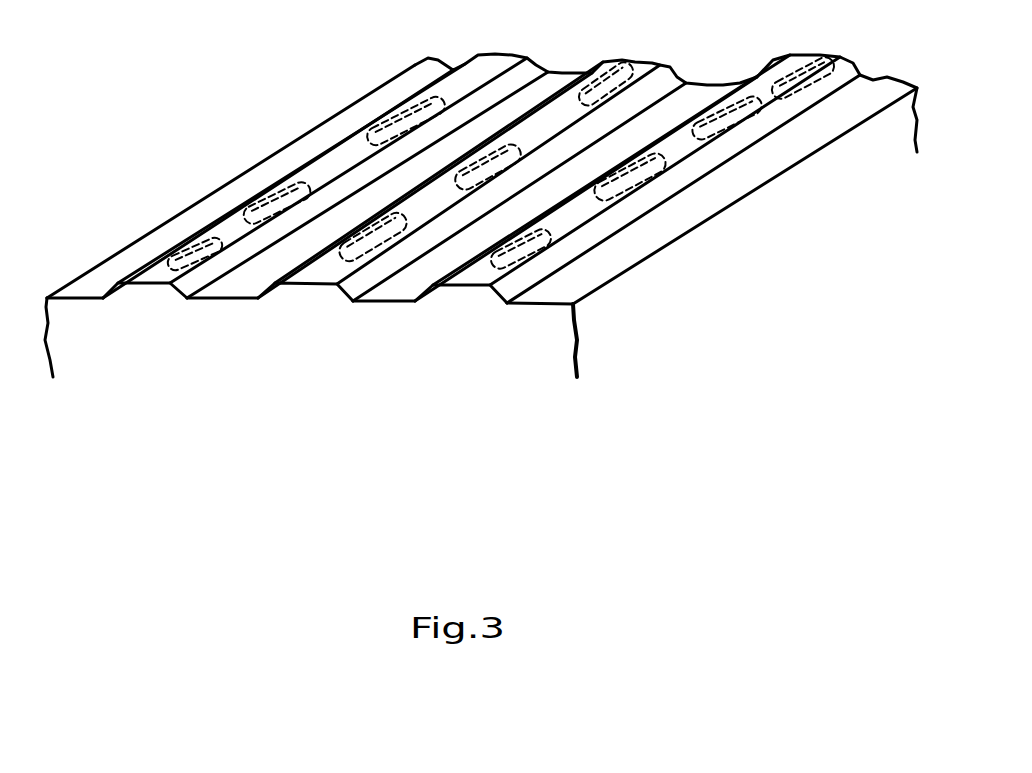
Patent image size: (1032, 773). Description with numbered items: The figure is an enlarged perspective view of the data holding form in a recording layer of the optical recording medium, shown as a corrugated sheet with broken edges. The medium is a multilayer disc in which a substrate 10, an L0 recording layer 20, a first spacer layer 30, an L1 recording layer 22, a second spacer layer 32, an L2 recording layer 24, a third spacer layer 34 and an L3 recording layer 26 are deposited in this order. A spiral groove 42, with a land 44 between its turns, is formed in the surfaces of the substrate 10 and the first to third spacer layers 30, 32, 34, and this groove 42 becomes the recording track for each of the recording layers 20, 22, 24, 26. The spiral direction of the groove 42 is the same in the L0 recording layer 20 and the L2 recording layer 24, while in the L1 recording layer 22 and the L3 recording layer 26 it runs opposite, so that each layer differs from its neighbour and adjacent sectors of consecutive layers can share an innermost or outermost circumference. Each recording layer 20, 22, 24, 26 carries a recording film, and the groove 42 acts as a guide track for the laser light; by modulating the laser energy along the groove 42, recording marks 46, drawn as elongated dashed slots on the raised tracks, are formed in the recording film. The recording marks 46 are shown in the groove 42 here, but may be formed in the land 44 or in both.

The substrate 10 is at (471, 242).
The first spacer layer 30 is at (471, 242).
The second spacer layer 32 is at (471, 242).
The third spacer layer 34 is at (471, 242).
The L0 recording layer 20 is at (471, 202).
The L1 recording layer 22 is at (471, 202).
The L2 recording layer 24 is at (471, 202).
The L3 recording layer 26 is at (471, 202).
The groove 42 is at (155, 270).
The land 44 is at (93, 285).
The recording mark 46 is at (434, 97).